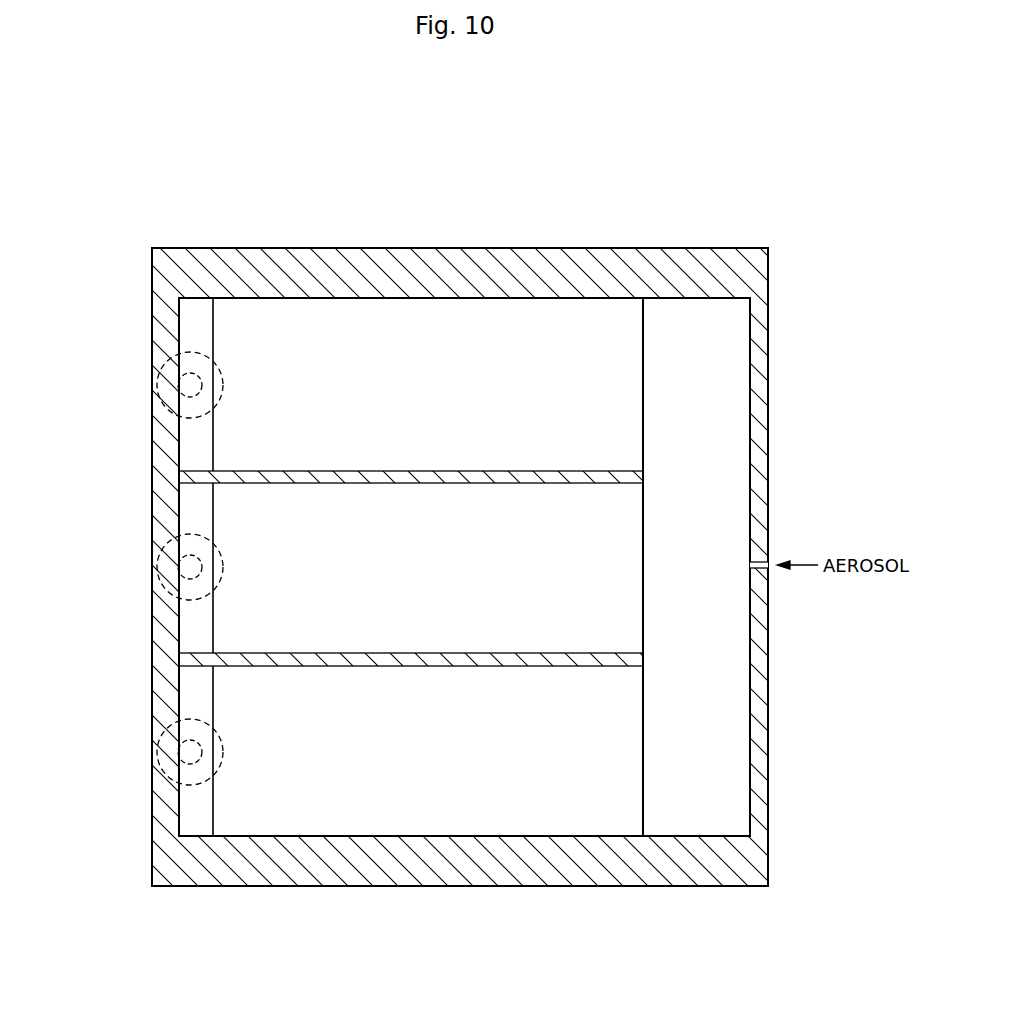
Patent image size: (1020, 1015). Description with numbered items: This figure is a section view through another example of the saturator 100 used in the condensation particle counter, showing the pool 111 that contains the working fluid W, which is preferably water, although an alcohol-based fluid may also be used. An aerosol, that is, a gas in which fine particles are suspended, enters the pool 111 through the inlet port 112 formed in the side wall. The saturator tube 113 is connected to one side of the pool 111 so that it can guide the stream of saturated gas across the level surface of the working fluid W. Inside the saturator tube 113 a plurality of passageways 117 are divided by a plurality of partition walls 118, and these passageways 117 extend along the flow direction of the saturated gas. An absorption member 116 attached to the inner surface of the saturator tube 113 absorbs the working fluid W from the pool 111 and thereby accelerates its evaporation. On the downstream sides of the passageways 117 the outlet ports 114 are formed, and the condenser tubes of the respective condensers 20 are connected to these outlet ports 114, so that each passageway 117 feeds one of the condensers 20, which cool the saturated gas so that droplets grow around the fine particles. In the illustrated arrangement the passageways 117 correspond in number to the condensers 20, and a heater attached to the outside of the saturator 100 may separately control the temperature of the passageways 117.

The aerosol spray nozzle apparatus 100 is at (510, 565).
The pool 111 is at (756, 375).
The inlet port 112 is at (760, 568).
The saturator tube 113 is at (260, 865).
The outlet ports 114 is at (192, 387).
The absorption member 116 is at (479, 333).
The passageways 117 is at (251, 478).
The partition walls 118 is at (350, 345).
The condensers 20 is at (142, 363).
The working fluid W is at (710, 725).